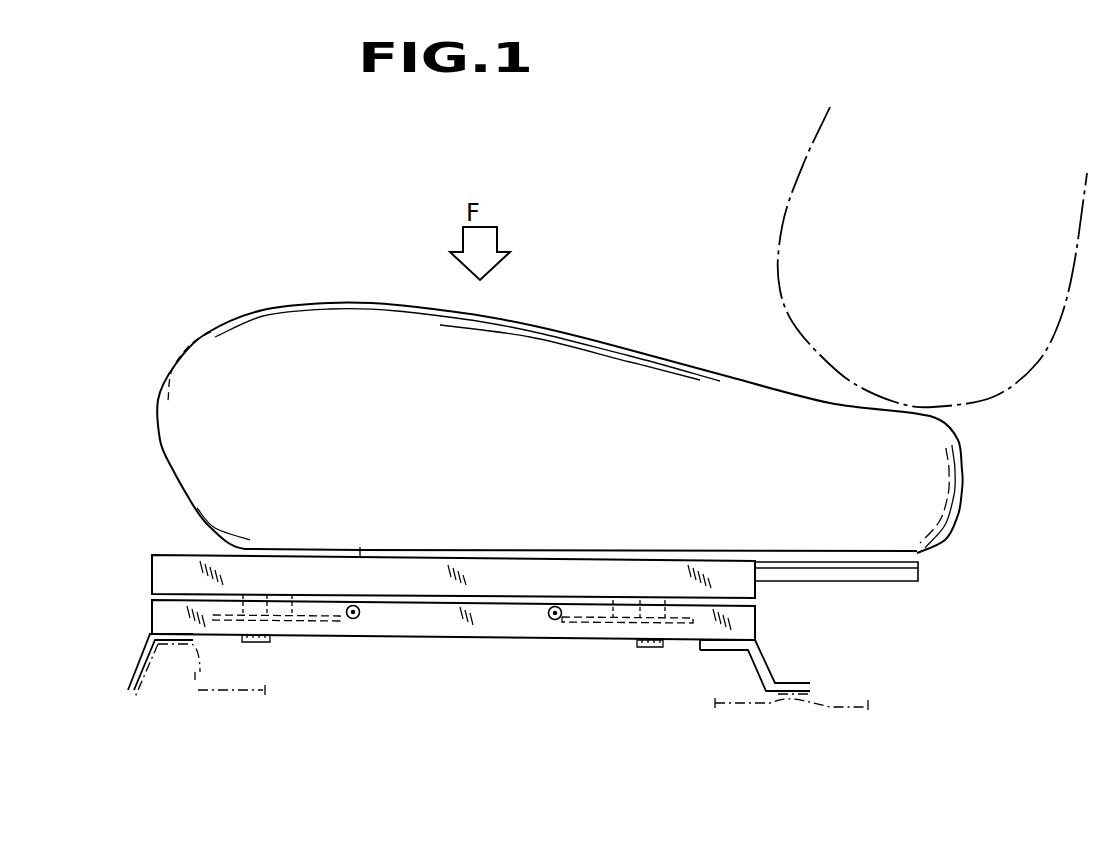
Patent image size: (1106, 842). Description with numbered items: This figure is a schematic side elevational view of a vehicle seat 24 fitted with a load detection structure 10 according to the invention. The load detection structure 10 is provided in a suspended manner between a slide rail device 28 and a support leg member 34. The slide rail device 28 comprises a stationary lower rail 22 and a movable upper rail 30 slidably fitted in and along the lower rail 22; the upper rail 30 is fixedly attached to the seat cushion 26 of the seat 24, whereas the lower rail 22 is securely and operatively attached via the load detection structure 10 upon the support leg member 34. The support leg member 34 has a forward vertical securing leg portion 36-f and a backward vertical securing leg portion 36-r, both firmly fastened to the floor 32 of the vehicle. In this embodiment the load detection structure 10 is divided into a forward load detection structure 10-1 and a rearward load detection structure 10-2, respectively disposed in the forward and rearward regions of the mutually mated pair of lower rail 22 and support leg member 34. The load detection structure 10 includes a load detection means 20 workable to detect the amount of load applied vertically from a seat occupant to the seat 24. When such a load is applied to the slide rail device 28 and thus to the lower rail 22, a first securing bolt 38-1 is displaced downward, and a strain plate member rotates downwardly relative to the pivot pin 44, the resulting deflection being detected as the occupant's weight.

The load detection structure 10 is at (548, 675).
The forward load detection structure 10-1 is at (290, 583).
The rearward load detection structure 10-2 is at (648, 587).
The load detection means 20 is at (332, 623).
The lower rail 22 is at (163, 560).
The vehicle seat 24 is at (698, 288).
The seat cushion 26 is at (943, 484).
The slide rail device 28 is at (836, 608).
The upper rail 30 is at (920, 567).
The floor 32 is at (203, 671).
The support leg member 34 is at (473, 641).
The forward vertical securing leg portion 36-f is at (143, 657).
The backward vertical securing leg portion 36-r is at (762, 666).
The first securing bolt 38-1 is at (275, 647).
The pivot pin 44 is at (360, 605).